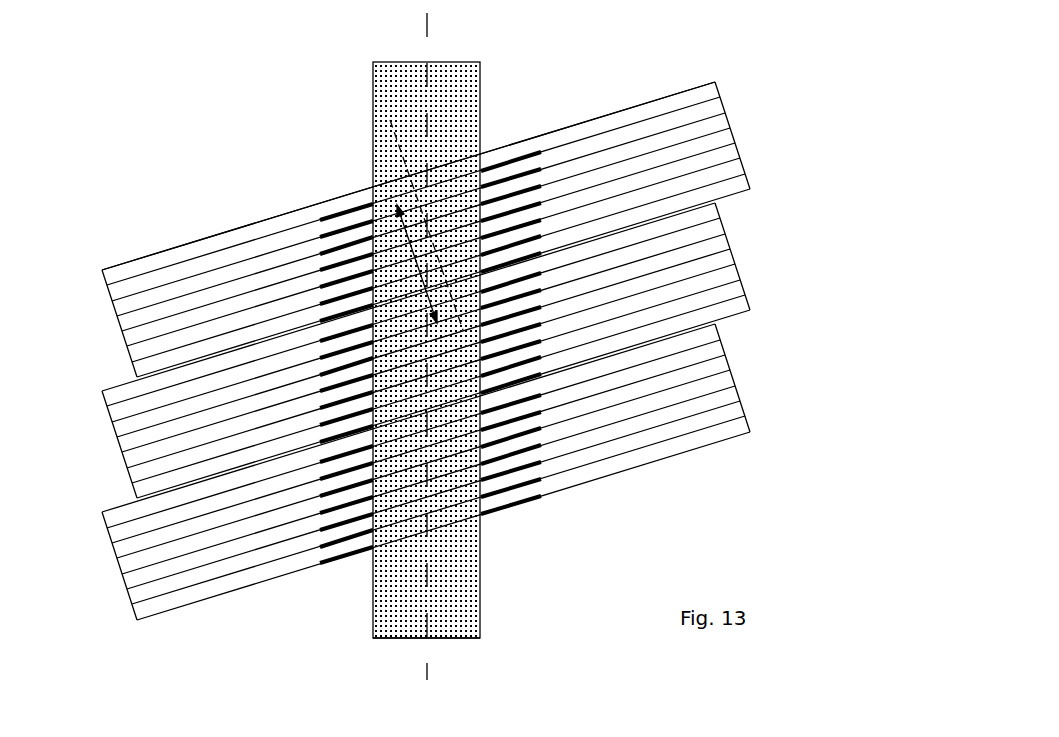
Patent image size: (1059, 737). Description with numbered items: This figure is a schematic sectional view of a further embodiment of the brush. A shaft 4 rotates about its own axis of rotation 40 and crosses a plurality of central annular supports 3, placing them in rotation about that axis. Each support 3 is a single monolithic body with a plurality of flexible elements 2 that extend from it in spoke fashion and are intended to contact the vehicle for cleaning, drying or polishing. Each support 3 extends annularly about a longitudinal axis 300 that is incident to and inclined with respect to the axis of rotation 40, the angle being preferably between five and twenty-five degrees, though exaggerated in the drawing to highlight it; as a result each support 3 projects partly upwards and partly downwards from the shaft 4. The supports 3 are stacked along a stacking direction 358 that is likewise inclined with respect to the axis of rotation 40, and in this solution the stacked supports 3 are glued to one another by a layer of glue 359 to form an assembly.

The flexible elements 2 is at (722, 122).
The central annular support 3 is at (490, 143).
The shaft 4 is at (388, 87).
The axis of rotation 40 is at (425, 625).
The longitudinal axis 300 is at (448, 257).
The stacking direction 358 is at (407, 247).
The layer of glue 359 is at (340, 290).